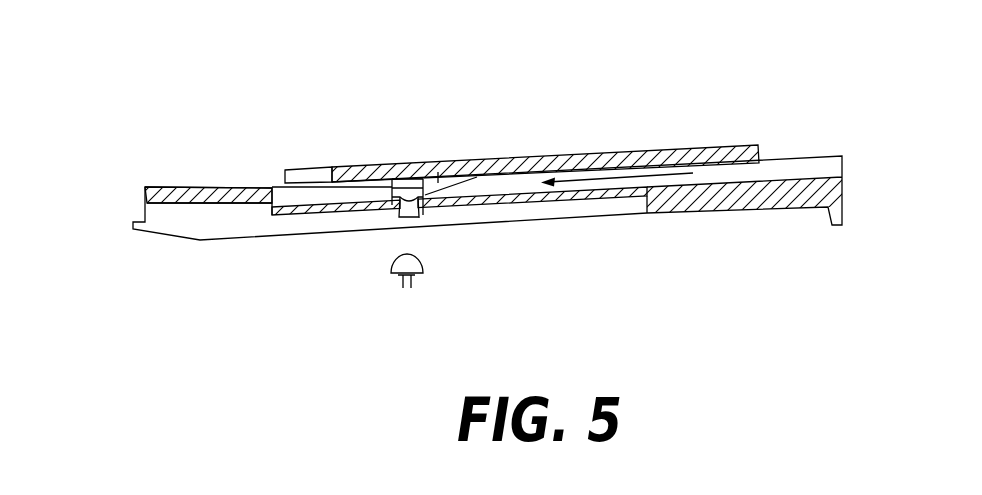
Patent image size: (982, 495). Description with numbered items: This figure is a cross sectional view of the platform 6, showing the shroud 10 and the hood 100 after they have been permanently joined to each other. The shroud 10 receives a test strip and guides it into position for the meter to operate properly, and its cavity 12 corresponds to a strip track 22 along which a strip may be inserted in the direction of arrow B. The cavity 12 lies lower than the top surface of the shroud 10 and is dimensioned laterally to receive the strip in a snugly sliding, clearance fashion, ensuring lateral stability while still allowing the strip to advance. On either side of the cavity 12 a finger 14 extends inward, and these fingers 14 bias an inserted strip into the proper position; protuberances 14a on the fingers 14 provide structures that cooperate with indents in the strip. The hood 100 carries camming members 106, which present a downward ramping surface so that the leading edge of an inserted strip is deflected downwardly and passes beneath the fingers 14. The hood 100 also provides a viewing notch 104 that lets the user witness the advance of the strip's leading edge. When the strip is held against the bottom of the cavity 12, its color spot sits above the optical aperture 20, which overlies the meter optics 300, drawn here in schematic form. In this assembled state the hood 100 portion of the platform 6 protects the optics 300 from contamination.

The platform 6 is at (129, 163).
The shroud 10 is at (263, 238).
The viewing notch 104 is at (308, 170).
The hood 100 is at (525, 156).
The strip track 22 is at (787, 165).
The cavity 12 is at (617, 196).
The arrow B is at (717, 168).
The finger 14 is at (413, 178).
The protuberances 14a is at (400, 218).
The camming members 106 is at (438, 172).
The optical aperture 20 is at (420, 218).
The meter optics 300 is at (428, 275).